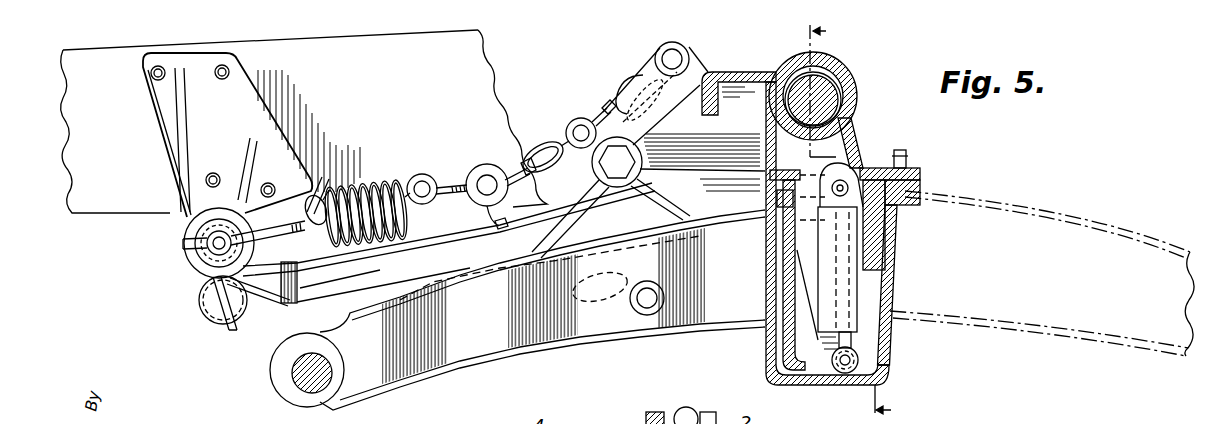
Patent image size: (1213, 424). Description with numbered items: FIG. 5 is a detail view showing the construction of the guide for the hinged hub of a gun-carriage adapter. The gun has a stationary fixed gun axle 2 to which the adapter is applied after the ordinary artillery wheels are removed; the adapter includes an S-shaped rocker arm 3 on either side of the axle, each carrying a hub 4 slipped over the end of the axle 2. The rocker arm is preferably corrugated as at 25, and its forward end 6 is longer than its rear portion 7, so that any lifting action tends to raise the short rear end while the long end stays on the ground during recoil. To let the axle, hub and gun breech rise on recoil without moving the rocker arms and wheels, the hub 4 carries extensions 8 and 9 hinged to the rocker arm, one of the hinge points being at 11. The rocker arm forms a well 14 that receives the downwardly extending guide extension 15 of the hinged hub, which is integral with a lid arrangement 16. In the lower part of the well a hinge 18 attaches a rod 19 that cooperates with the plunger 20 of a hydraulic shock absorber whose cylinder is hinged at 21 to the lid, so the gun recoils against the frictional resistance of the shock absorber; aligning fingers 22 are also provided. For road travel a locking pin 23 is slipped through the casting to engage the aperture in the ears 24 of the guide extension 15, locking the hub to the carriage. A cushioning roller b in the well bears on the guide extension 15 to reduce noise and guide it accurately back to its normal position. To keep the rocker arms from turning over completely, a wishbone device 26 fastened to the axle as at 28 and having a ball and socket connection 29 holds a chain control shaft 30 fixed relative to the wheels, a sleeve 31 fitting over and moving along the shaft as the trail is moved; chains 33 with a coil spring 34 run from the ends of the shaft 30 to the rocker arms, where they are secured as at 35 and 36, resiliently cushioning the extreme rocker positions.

The gun axle 2 is at (847, 80).
The S-shaped rocker arm 3 is at (598, 339).
The hub 4 is at (745, 72).
The forward end 6 is at (842, 221).
The rear portion 7 is at (514, 353).
The extension 8 is at (1025, 330).
The extension 9 is at (612, 156).
The hinge point 11 is at (578, 119).
The well 14 is at (893, 283).
The guide extension 15 is at (767, 340).
The lid arrangement 16 is at (921, 176).
The hinge 18 is at (858, 364).
The rod 19 is at (874, 343).
The plunger 20 is at (820, 228).
The hinge 21 is at (860, 166).
The aligning fingers 22 is at (906, 157).
The locking pin 23 is at (795, 262).
The ears 24 is at (795, 238).
The corrugations 25 is at (532, 295).
The wishbone device 26 is at (428, 254).
The bracket fastening 28 is at (686, 410).
The ball and socket connection 29 is at (212, 327).
The chain control shaft 30 is at (202, 272).
The sleeve 31 is at (193, 190).
The chain 33 is at (455, 170).
The coil spring 34 is at (370, 181).
The chain attachment 35 is at (650, 308).
The chain attachment 36 is at (676, 51).
The cushioning roller b is at (812, 233).